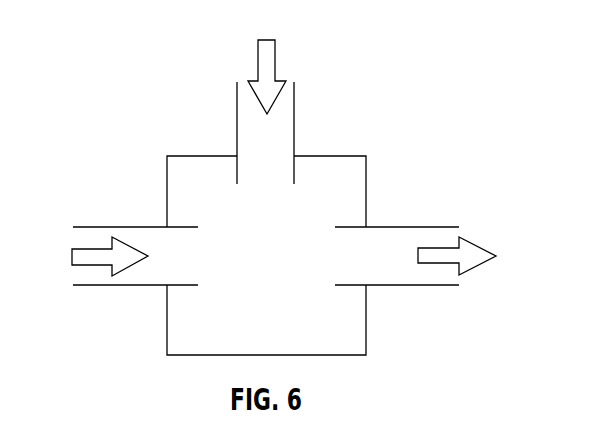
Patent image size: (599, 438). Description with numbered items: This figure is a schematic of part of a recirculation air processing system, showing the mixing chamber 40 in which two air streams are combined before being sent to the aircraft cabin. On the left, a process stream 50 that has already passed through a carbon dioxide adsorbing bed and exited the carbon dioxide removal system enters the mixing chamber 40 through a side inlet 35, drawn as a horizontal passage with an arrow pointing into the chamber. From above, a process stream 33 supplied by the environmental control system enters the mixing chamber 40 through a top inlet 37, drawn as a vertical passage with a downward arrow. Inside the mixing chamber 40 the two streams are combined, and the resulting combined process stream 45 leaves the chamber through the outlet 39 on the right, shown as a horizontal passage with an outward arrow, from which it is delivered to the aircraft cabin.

The process stream from the environmental control system 33 is at (277, 58).
The inlet 37 is at (277, 135).
The mixing chamber 40 is at (280, 315).
The inlet 35 is at (149, 262).
The process stream 50 is at (100, 263).
The outlet 39 is at (380, 262).
The combined process stream 45 is at (427, 263).